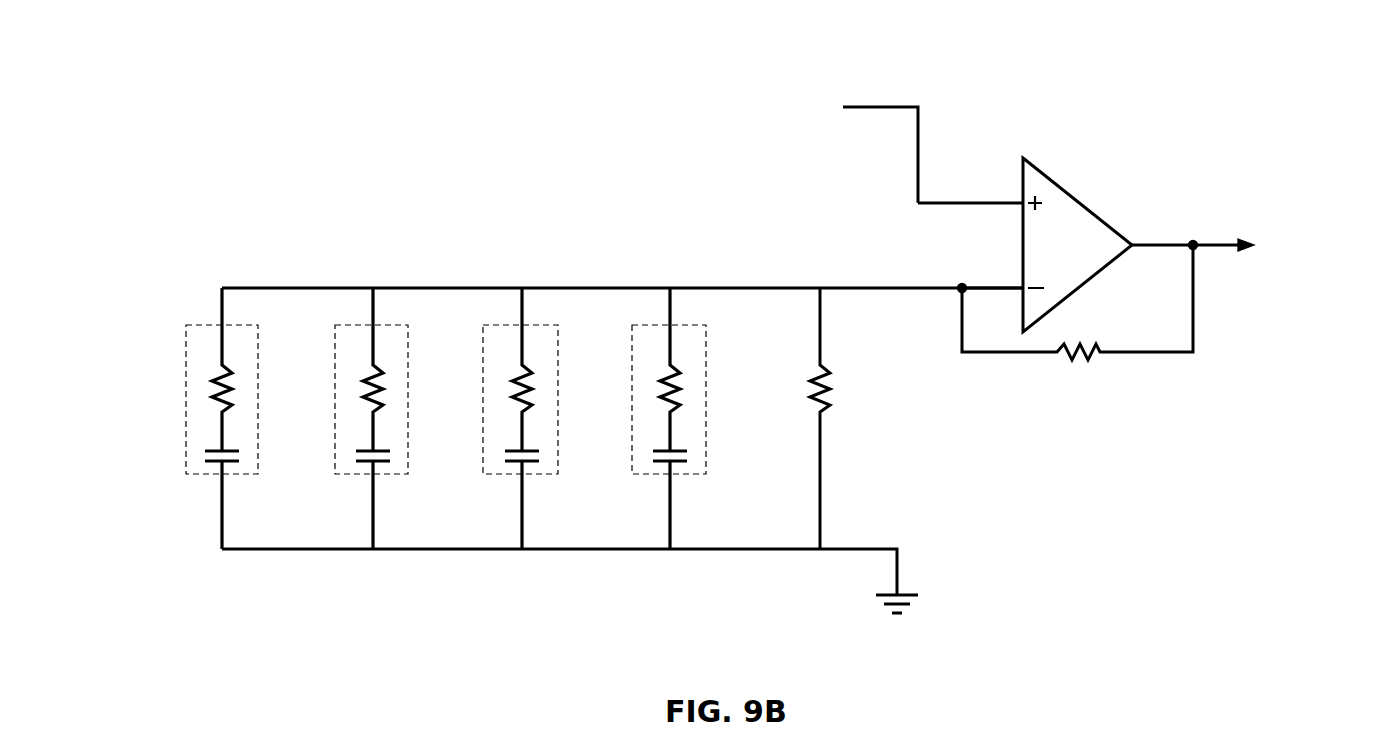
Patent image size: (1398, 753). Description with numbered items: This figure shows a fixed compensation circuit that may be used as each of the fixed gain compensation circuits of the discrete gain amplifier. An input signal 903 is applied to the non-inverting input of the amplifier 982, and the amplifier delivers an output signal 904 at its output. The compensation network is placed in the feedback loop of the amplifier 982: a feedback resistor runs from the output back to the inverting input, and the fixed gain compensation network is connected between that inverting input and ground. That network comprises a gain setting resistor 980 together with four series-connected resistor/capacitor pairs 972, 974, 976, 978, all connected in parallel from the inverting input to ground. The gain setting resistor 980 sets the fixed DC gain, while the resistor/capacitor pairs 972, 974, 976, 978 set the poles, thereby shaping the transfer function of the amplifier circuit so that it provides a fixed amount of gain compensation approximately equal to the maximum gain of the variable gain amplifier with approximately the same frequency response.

The input signal 903 is at (771, 70).
The output signal 904 is at (1326, 205).
The series-connected resistor/capacitor pair 972 is at (186, 398).
The series-connected resistor/capacitor pair 974 is at (348, 325).
The series-connected resistor/capacitor pair 976 is at (497, 325).
The series-connected resistor/capacitor pair 978 is at (645, 325).
The gain setting resistor 980 is at (830, 384).
The amplifier 982 is at (1073, 197).